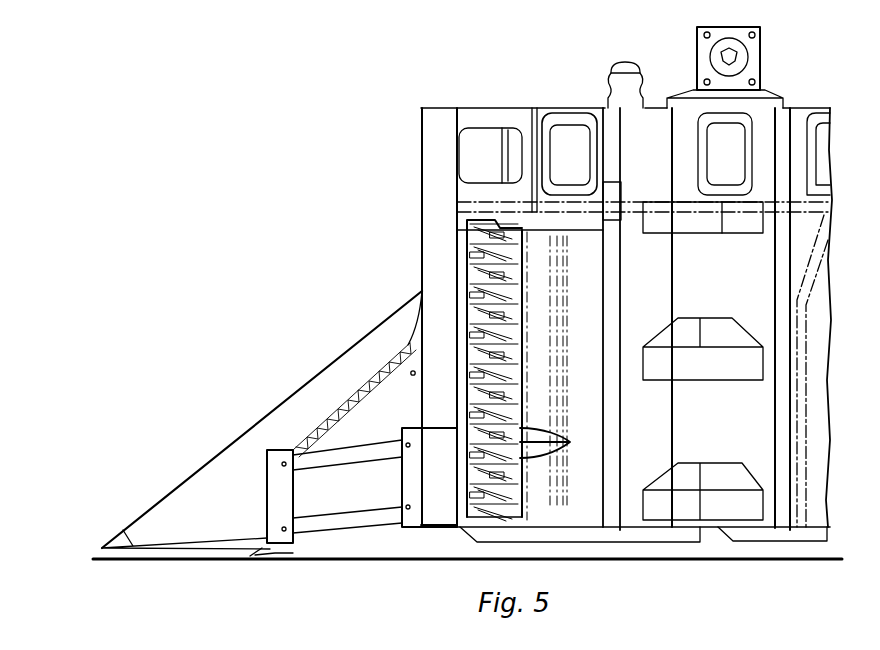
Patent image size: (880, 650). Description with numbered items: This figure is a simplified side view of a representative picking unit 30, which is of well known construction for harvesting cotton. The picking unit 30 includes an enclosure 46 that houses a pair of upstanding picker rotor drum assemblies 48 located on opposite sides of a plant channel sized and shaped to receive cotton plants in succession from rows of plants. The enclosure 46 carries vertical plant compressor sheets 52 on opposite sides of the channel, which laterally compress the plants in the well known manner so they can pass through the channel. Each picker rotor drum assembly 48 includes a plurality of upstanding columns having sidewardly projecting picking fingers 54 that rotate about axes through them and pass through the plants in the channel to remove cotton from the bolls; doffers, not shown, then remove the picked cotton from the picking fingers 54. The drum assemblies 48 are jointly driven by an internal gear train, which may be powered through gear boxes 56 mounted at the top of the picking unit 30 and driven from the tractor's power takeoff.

The picking unit 30 is at (356, 222).
The enclosure 46 is at (551, 108).
The picker rotor drum assembly 48 is at (446, 283).
The vertical plant compressor sheet 52 is at (215, 459).
The picking finger 54 is at (570, 442).
The gear box 56 is at (760, 50).